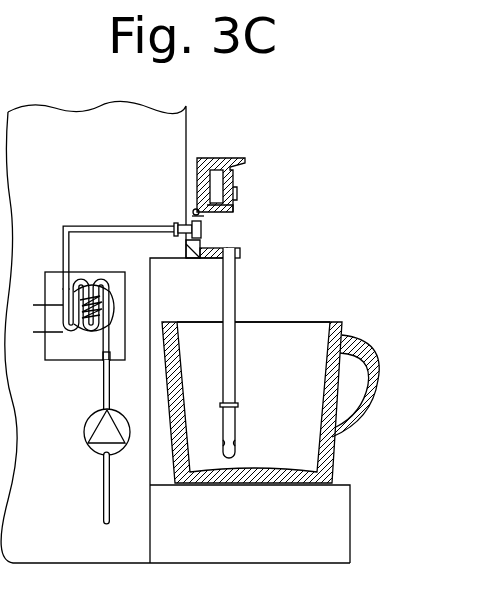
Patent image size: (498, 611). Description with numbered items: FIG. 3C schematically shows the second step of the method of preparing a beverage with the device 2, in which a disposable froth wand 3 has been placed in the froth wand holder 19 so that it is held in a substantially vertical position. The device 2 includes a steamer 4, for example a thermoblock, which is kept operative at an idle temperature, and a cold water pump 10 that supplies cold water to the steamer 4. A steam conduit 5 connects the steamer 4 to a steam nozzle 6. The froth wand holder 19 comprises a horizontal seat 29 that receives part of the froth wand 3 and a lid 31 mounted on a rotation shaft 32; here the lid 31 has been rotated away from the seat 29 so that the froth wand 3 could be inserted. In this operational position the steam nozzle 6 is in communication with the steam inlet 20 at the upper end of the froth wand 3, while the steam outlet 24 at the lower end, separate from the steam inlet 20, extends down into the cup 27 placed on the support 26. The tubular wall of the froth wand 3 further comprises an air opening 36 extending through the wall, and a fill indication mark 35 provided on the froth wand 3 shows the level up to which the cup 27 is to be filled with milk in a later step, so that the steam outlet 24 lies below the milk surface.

The device 2 is at (173, 118).
The froth wand 3 is at (236, 302).
The steamer 4 is at (67, 350).
The steam conduit 5 is at (75, 225).
The steam nozzle 6 is at (180, 223).
The cold water pump 10 is at (95, 447).
The froth wand holder 19 is at (278, 172).
The steam inlet 20 is at (230, 247).
The steam outlet 24 is at (237, 440).
The support 26 is at (345, 478).
The cup 27 is at (343, 333).
The horizontal seat 29 is at (222, 263).
The lid 31 is at (228, 152).
The rotation shaft 32 is at (193, 210).
The fill indication mark 35 is at (233, 403).
The air opening 36 is at (229, 263).